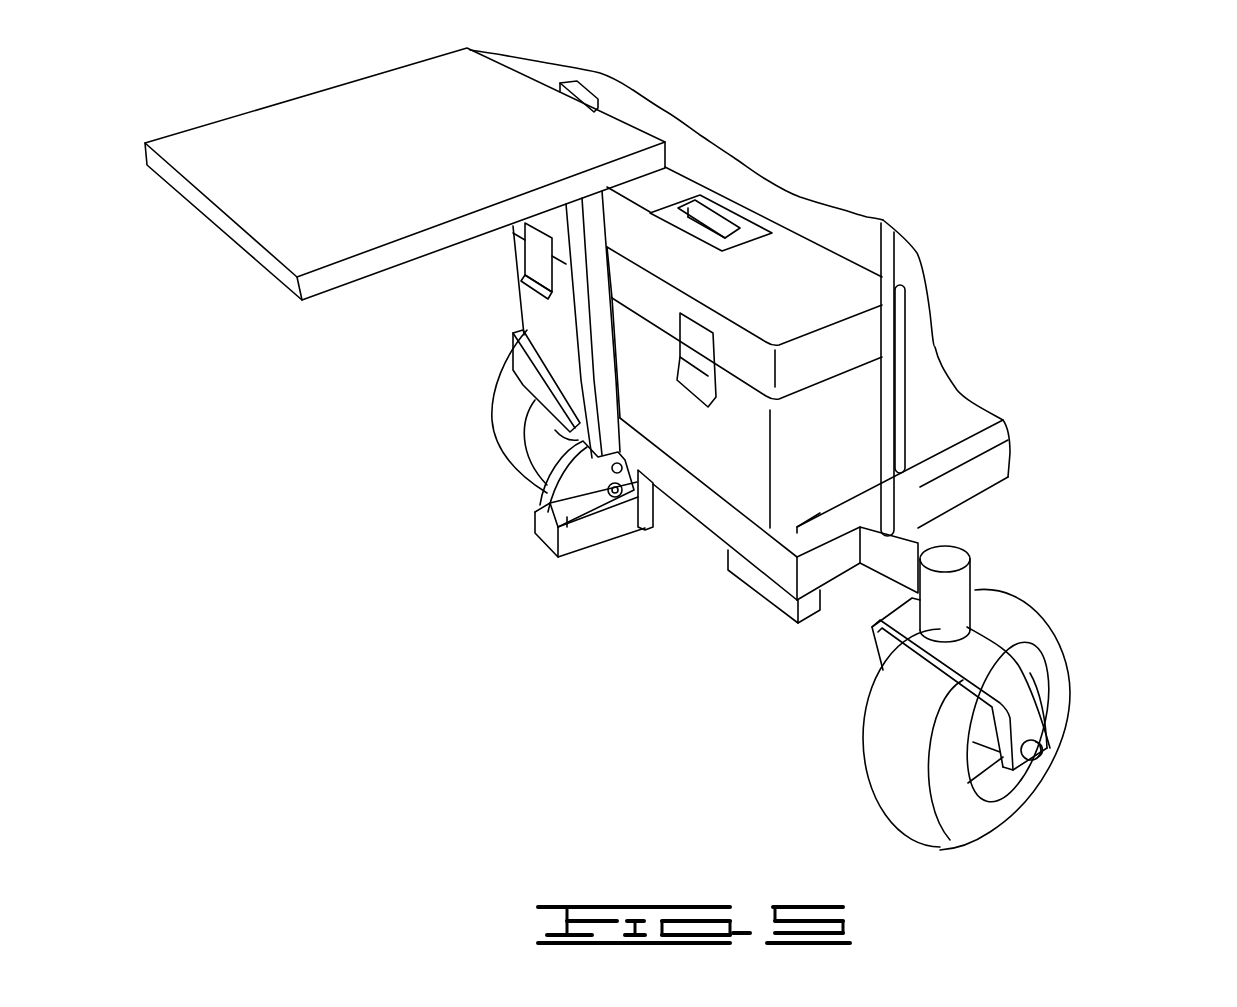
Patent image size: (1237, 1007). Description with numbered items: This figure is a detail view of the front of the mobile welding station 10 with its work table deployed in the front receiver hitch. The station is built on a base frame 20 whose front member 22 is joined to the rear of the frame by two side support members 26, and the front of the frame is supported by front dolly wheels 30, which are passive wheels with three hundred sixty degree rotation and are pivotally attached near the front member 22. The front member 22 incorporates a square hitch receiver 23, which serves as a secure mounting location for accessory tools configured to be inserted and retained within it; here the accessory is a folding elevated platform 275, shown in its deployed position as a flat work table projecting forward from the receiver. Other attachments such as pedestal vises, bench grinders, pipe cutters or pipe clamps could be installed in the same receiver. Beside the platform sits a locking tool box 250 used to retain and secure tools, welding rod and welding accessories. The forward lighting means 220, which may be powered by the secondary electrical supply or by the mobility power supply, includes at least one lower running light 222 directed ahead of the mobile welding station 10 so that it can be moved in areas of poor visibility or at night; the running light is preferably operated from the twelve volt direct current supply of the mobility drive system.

The mobile welding station 10 is at (708, 120).
The base frame 20 is at (520, 363).
The front member 22 is at (717, 520).
The square hitch receiver 23 is at (663, 507).
The side support member 26 is at (980, 482).
The front dolly wheel 30 is at (492, 405).
The forward lighting means 220 is at (780, 607).
The lower running light 222 is at (535, 400).
The locking tool box 250 is at (800, 255).
The folding elevated platform 275 is at (277, 135).